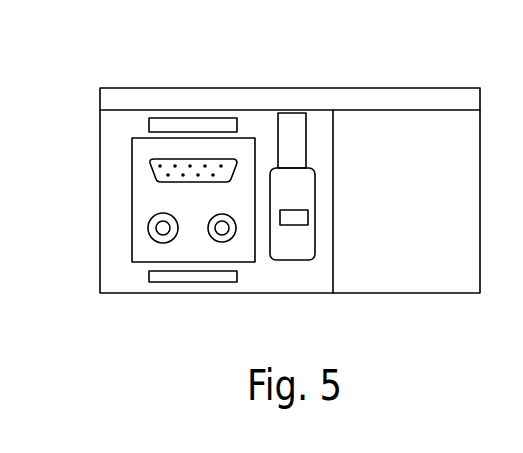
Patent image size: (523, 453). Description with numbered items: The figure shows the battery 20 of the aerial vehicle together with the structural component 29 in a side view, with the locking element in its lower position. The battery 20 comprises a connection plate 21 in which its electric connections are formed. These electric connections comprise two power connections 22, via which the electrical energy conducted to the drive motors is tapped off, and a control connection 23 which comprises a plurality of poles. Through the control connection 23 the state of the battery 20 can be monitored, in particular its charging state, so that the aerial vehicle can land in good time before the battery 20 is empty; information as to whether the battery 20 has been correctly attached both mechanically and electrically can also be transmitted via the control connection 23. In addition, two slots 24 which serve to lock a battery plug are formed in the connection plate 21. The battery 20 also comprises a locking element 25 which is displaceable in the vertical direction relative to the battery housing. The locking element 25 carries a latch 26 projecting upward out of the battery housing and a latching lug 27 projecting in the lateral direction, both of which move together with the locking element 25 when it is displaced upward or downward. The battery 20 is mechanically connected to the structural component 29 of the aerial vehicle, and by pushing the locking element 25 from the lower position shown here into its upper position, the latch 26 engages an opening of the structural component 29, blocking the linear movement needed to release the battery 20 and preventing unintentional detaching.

The battery 20 is at (100, 232).
The connection plate 21 is at (115, 123).
The power connections 22 is at (153, 238).
The control connection 23 is at (150, 172).
The slots 24 is at (192, 123).
The locking element 25 is at (300, 192).
The latch 26 is at (293, 135).
The latching lug 27 is at (305, 214).
The structural component 29 is at (418, 100).